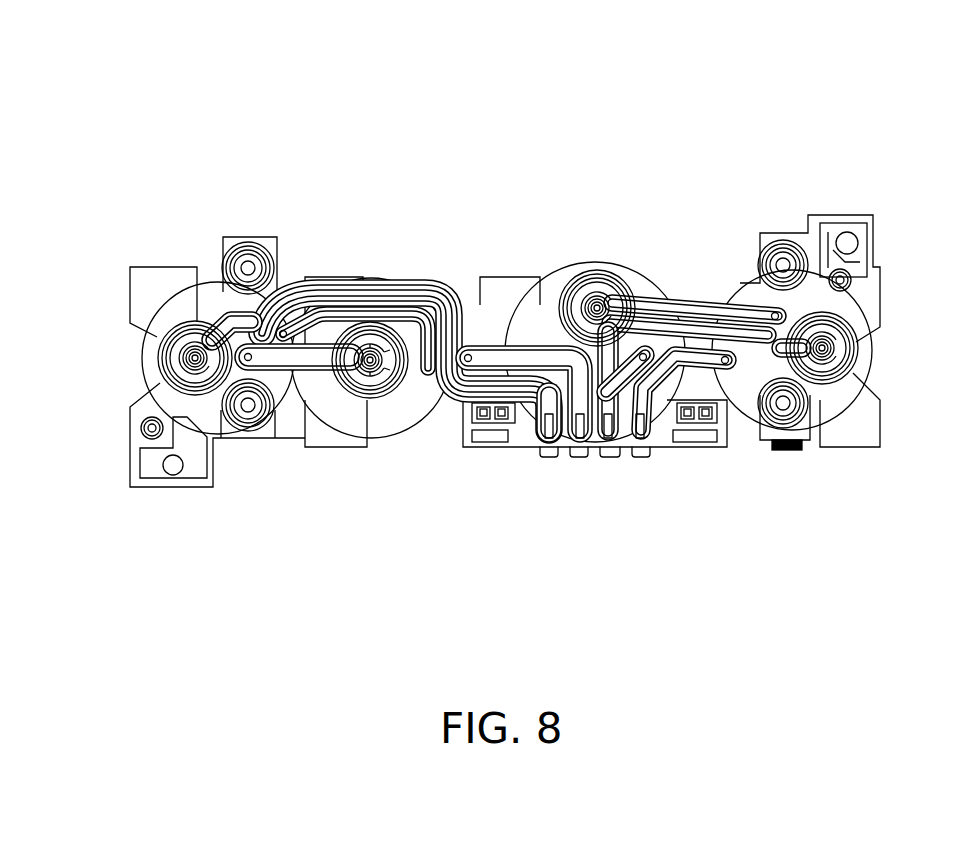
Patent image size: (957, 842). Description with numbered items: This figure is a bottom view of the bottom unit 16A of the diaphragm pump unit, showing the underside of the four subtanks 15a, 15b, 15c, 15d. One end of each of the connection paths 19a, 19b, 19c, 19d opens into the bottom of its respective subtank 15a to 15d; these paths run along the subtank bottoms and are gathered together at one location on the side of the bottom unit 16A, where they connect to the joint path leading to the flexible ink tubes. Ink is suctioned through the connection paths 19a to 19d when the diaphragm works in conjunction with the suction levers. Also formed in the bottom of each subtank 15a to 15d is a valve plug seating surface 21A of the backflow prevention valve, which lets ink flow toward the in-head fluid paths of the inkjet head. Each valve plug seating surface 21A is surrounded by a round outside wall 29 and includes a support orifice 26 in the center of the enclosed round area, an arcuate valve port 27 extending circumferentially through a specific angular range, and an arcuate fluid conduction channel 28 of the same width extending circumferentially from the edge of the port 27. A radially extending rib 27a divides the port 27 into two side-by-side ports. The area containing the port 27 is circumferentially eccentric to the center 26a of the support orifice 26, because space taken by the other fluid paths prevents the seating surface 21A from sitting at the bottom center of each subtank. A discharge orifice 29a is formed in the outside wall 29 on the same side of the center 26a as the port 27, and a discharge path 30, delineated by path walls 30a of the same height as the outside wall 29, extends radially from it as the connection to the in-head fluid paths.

The bottom unit 16A is at (474, 319).
The subtank 15a is at (737, 427).
The subtank 15b is at (537, 280).
The subtank 15c is at (447, 283).
The subtank 15d is at (176, 297).
The connection path 19a is at (637, 460).
The connection path 19b is at (608, 462).
The connection path 19c is at (580, 460).
The connection path 19d is at (547, 460).
The valve plug seating surface 21A is at (592, 270).
The support orifice 26 is at (364, 375).
The center of the support orifice 26a is at (375, 378).
The arcuate valve port 27 is at (200, 346).
The rib 27a is at (387, 362).
The arcuate fluid conduction channel 28 is at (186, 352).
The round outside wall 29 is at (447, 293).
The discharge orifice 29a is at (325, 330).
The discharge path 30 is at (303, 362).
The path walls 30a is at (289, 362).